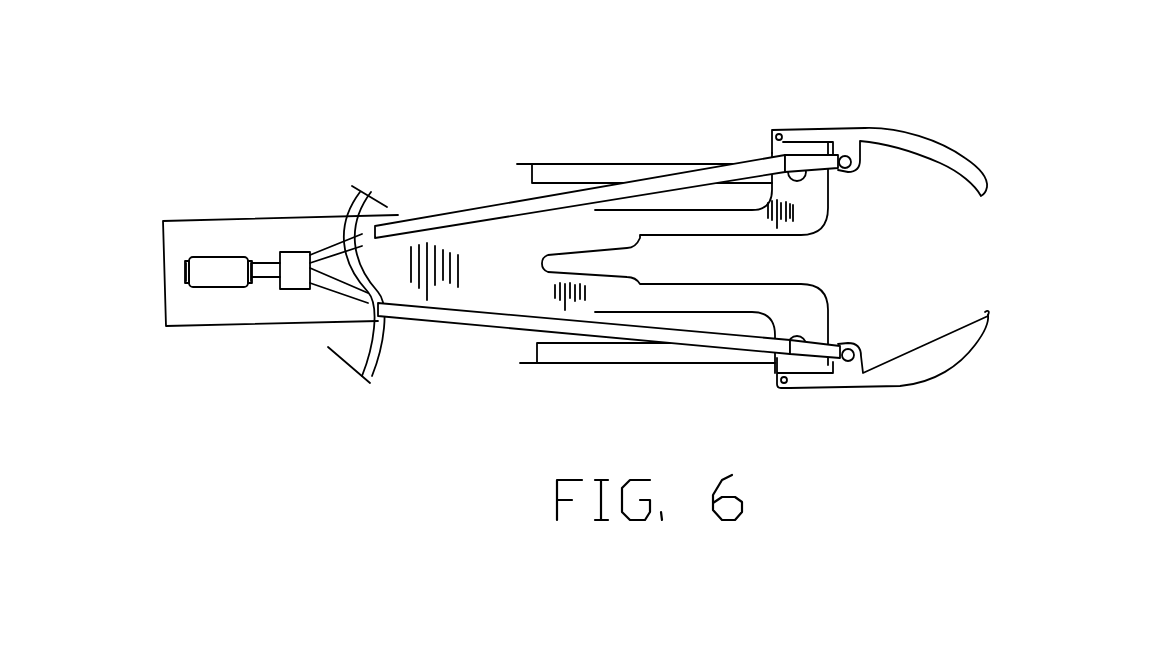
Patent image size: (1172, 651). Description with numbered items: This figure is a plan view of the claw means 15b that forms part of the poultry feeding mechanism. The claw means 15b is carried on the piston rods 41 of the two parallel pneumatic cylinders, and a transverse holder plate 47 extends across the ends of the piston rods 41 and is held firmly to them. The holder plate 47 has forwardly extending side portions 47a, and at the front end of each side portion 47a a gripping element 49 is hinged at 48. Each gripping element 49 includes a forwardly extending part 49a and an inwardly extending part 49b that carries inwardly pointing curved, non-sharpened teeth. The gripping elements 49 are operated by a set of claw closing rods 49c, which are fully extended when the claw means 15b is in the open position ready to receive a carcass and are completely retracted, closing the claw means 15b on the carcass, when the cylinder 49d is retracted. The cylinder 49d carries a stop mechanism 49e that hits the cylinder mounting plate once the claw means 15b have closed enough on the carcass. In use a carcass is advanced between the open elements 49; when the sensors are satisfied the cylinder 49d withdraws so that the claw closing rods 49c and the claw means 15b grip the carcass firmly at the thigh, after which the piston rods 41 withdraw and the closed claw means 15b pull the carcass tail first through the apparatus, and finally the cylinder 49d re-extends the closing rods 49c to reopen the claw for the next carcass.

The claw means 15b is at (1023, 187).
The piston rods 41 is at (610, 177).
The transverse holder plate 47 is at (507, 268).
The forwardly extending side portions 47a is at (782, 156).
The hinge 48 is at (783, 136).
The gripping elements 49 is at (935, 133).
The forwardly extending part 49a is at (922, 370).
The inwardly extending part 49b is at (993, 317).
The claw closing rods 49c is at (680, 340).
The cylinder 49d is at (222, 272).
The stop mechanism 49e is at (292, 265).